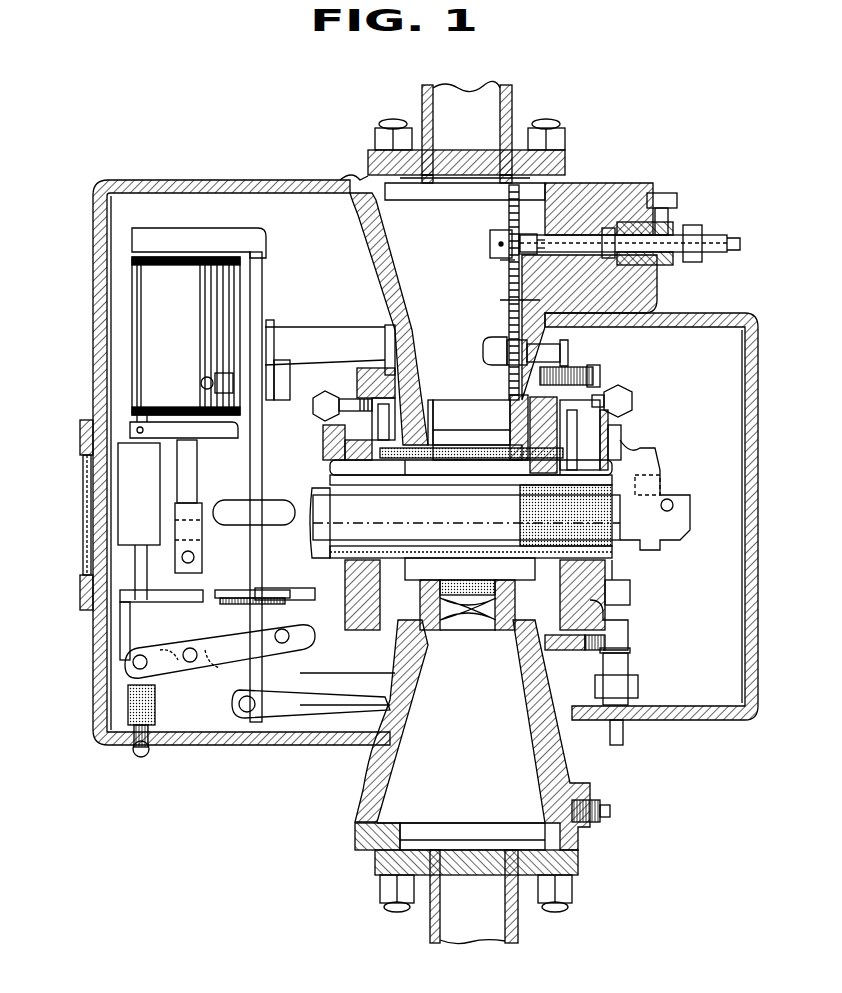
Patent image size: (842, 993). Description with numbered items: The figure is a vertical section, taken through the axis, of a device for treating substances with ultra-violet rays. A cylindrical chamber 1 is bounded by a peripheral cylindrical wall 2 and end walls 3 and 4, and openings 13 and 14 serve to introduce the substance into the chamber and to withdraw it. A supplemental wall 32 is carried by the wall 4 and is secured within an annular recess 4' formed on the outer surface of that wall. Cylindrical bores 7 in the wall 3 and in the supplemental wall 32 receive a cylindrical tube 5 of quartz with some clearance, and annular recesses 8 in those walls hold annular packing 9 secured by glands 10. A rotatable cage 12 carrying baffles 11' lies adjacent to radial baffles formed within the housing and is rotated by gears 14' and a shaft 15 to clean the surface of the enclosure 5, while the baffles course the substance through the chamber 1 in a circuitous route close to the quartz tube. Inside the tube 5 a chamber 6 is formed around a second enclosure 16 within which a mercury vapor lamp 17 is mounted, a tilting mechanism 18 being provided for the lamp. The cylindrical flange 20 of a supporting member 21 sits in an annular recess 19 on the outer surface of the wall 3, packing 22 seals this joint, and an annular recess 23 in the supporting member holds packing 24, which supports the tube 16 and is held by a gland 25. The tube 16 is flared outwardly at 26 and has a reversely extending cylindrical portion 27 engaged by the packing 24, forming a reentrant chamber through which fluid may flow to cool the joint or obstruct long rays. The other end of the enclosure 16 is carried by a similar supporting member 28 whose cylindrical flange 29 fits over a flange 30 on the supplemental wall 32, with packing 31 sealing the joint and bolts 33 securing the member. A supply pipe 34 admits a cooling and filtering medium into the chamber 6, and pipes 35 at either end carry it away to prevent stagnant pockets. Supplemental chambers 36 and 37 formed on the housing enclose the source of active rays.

The cylindrical chamber 1 is at (355, 185).
The peripheral cylindrical wall 2 is at (450, 195).
The end wall 3 is at (368, 256).
The end wall 4 is at (573, 291).
The annular recess 4' is at (511, 355).
The cylindrical tube 5 is at (478, 560).
The chamber 6 is at (470, 478).
The cylindrical bores 7 is at (482, 466).
The annular recesses 8 is at (420, 430).
The annular packing 9 is at (398, 480).
The glands 10 is at (357, 385).
The baffles 11' is at (469, 408).
The rotatable cage 12 is at (420, 628).
The opening 13 is at (472, 98).
The opening 14 is at (449, 902).
The gears 14' is at (494, 292).
The shaft 15 is at (718, 234).
The second enclosure 16 is at (485, 560).
The mercury vapor lamp 17 is at (622, 535).
The tilting mechanism 18 is at (140, 570).
The annular recess 19 is at (385, 345).
The cylindrical flange 20 is at (380, 372).
The supporting member 21 is at (323, 438).
The packing 22 is at (420, 355).
The annular recess 23 is at (340, 605).
The packing 24 is at (290, 540).
The gland 25 is at (318, 603).
The flared portion 26 is at (330, 467).
The reversely extending cylindrical portion 27 is at (350, 470).
The supporting member 28 is at (621, 432).
The cylindrical flange 29 is at (600, 375).
The flange 30 is at (630, 392).
The packing 31 is at (560, 370).
The supplemental wall 32 is at (510, 400).
The bolts 33 is at (593, 387).
The supply pipe 34 is at (608, 745).
The pipes 35 is at (313, 408).
The supplemental chamber 36 is at (712, 703).
The supplemental chamber 37 is at (200, 725).